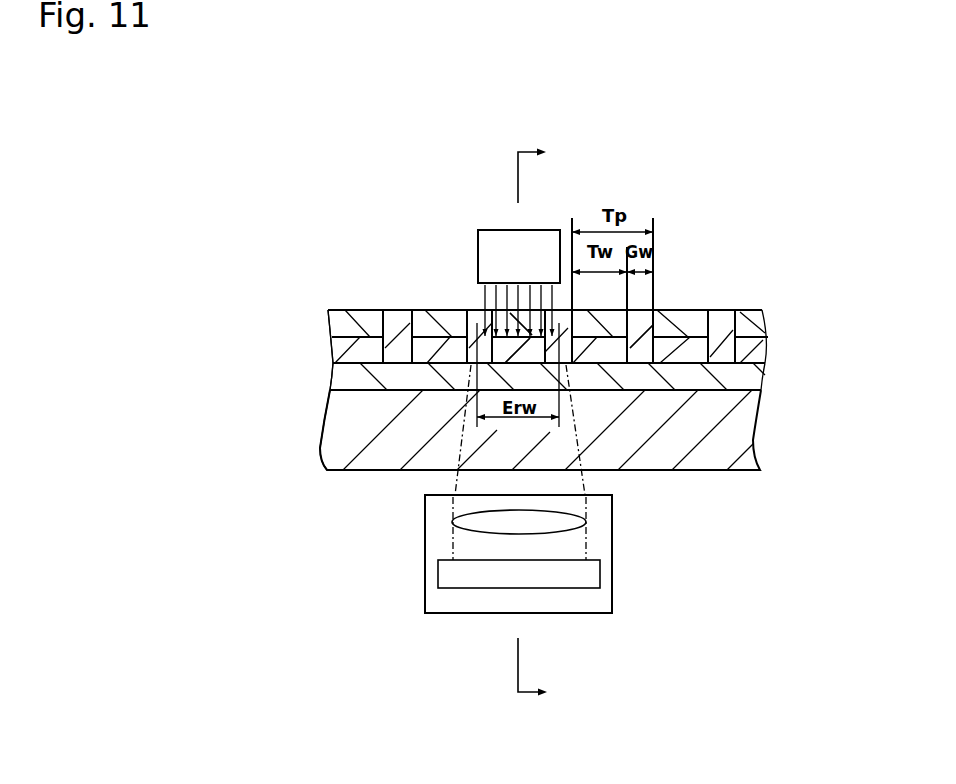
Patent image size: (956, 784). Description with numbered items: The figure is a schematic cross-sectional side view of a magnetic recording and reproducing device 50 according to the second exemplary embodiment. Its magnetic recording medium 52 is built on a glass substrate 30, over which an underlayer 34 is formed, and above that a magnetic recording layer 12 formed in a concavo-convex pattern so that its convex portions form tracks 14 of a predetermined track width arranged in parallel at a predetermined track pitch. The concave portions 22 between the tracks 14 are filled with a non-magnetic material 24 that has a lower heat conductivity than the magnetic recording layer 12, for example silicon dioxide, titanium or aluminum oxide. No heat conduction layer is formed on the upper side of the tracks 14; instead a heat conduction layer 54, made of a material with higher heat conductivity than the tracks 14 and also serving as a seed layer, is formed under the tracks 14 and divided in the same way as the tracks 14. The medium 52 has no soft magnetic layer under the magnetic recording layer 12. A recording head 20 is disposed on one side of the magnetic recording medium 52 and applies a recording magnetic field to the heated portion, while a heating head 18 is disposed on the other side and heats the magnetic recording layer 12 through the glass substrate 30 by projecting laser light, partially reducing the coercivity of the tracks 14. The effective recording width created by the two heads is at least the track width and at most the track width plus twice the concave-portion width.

The magnetic recording and reproducing device 50 is at (582, 103).
The recording head 20 is at (490, 229).
The concave portions 22 is at (643, 326).
The magnetic recording layer 12 is at (772, 322).
The heat conduction layer 54 is at (774, 352).
The underlayer 34 is at (767, 380).
The glass substrate 30 is at (757, 437).
The non-magnetic material 24 is at (640, 355).
The tracks 14 is at (595, 333).
The heating head 18 is at (425, 522).
The magnetic recording medium 52 is at (295, 370).